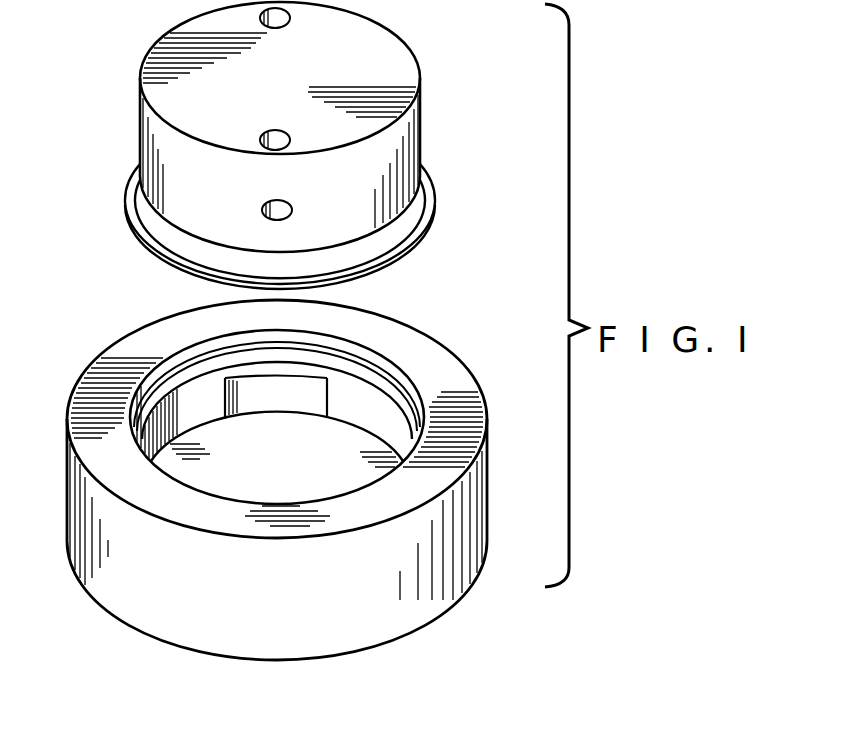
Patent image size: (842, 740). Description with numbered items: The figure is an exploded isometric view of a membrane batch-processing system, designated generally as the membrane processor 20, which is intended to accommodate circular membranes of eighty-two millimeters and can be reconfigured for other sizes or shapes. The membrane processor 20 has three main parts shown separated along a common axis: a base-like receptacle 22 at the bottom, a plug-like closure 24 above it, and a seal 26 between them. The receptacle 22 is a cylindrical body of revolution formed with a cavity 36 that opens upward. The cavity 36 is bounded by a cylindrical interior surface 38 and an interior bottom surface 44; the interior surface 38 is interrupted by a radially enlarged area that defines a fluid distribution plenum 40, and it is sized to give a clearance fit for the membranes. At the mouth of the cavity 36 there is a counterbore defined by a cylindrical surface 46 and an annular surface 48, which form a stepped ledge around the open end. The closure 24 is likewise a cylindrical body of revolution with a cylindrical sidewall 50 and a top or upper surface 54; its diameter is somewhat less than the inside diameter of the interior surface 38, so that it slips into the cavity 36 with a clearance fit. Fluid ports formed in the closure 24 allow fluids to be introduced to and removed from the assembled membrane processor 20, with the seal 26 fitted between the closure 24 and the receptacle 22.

The membrane processor 20 is at (290, 331).
The receptacle 22 is at (306, 469).
The closure 24 is at (325, 127).
The seal 26 is at (433, 208).
The cavity 36 is at (268, 391).
The cylindrical interior surface 38 is at (180, 422).
The fluid distribution plenum 40 is at (265, 390).
The interior bottom surface 44 is at (325, 470).
The cylindrical surface of counterbore 46 is at (172, 362).
The annular surface of counterbore 48 is at (217, 358).
The cylindrical sidewall of closure 50 is at (398, 157).
The top surface of closure 54 is at (390, 50).